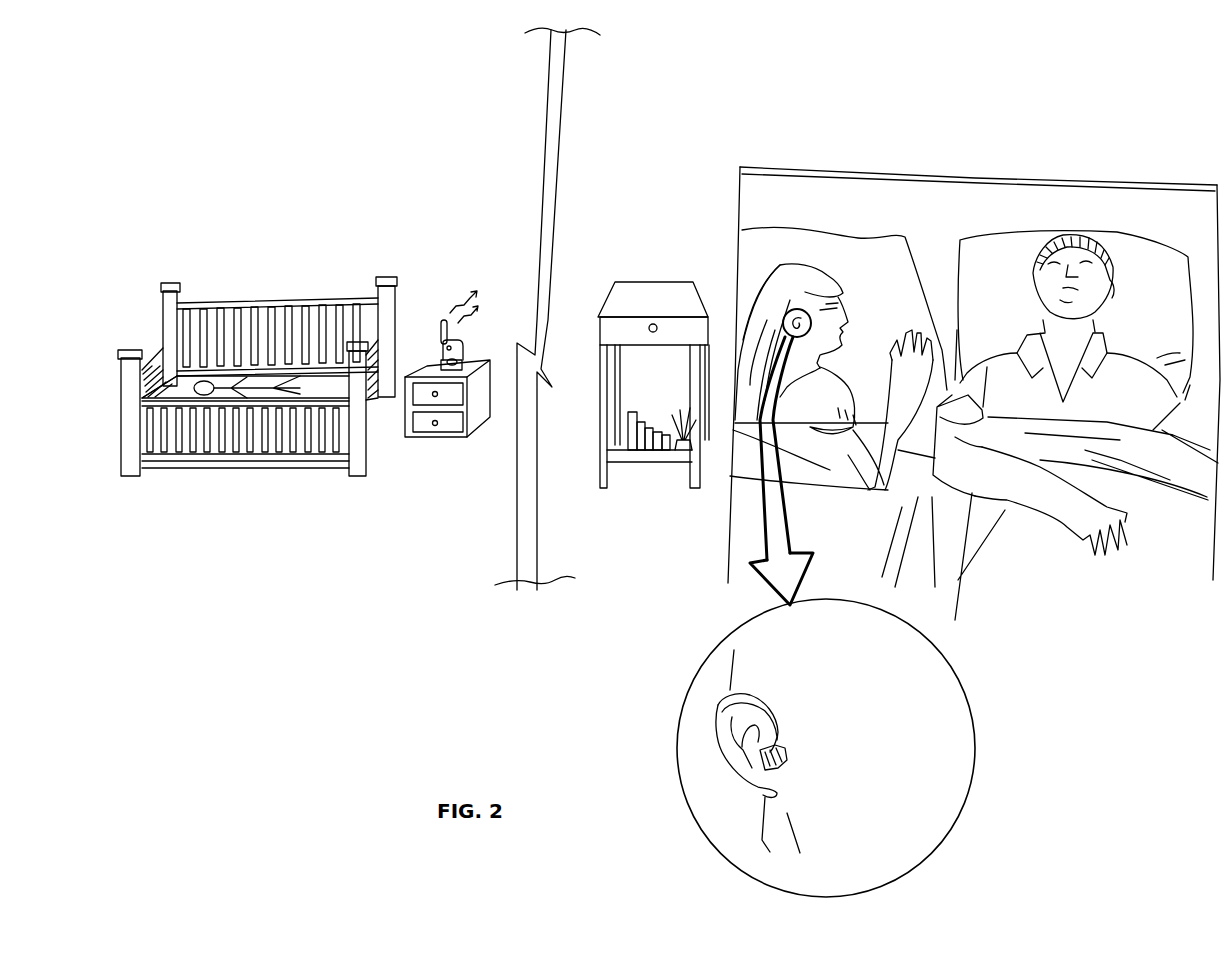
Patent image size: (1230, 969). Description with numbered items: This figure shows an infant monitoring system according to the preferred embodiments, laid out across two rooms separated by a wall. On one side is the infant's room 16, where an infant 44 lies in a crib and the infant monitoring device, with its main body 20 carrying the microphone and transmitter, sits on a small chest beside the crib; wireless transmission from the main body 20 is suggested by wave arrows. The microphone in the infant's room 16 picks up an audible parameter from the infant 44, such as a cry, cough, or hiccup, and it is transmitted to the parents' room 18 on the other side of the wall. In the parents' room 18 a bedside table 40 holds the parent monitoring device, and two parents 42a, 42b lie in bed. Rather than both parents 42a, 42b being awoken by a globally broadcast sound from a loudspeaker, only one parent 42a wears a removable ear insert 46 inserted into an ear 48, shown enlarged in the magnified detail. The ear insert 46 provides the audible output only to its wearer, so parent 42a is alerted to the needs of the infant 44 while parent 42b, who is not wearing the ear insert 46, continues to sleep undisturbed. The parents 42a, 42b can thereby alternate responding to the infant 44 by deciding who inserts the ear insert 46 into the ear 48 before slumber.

The infant's room 16 is at (525, 560).
The parents' room 18 is at (542, 560).
The main body 20 is at (442, 358).
The bedside table 40 is at (618, 297).
The parent 42a is at (797, 275).
The parent 42b is at (1112, 265).
The infant 44 is at (287, 391).
The removable ear insert 46 is at (777, 790).
The ear 48 is at (718, 706).